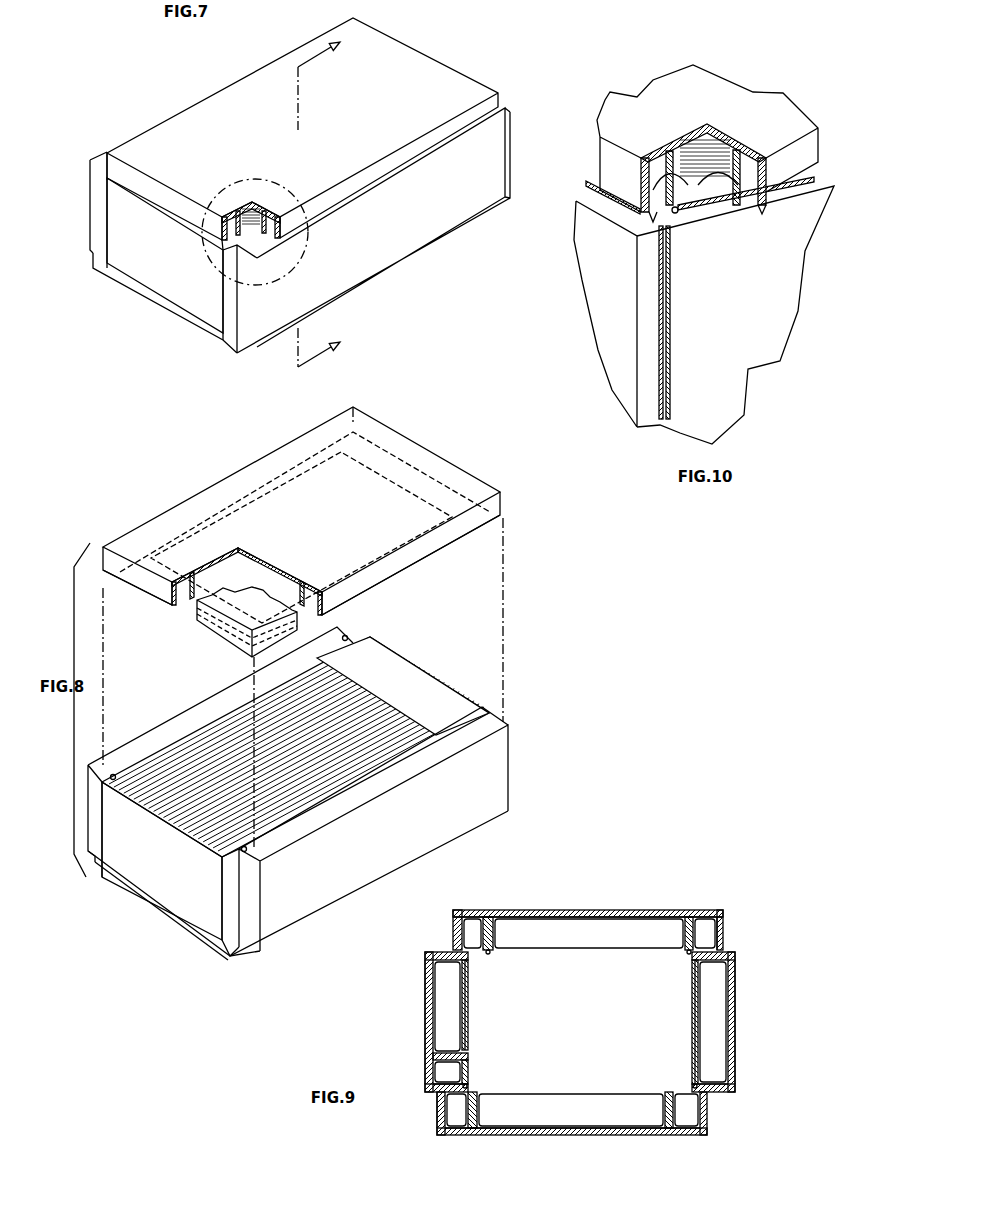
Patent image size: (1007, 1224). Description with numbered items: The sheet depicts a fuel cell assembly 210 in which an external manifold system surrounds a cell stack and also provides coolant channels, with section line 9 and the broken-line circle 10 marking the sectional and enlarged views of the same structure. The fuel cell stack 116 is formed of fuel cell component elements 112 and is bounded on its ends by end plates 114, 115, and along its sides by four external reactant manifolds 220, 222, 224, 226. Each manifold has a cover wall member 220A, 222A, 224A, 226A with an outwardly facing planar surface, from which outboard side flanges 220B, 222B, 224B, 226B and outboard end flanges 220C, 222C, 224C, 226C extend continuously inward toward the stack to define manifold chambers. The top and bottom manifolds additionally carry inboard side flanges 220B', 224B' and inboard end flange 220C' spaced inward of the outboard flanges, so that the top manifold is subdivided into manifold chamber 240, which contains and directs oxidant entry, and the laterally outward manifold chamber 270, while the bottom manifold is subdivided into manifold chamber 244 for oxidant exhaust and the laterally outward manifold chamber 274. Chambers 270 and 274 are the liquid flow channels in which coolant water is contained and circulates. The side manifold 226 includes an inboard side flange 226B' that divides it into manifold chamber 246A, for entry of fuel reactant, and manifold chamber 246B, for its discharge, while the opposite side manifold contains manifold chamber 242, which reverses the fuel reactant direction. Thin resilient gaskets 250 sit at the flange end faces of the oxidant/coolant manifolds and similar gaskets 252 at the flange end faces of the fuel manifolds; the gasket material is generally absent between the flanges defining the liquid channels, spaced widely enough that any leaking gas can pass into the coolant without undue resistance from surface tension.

In FIG. 7, the fuel cell assembly 210 is at (157, 100).
In FIG. 8, the fuel cell assembly 210 is at (555, 580).
In FIG. 9, the fuel cell assembly 210 is at (752, 1017).
In FIG. 7, the reactant manifold 220 is at (413, 75).
In FIG. 10, the reactant manifold 220 is at (717, 95).
In FIG. 8, the reactant manifold 220 is at (413, 453).
In FIG. 9, the reactant manifold 220 is at (640, 908).
In FIG. 9, the cover wall member 220A is at (560, 912).
In FIG. 8, the outboard side flange 220B is at (411, 565).
In FIG. 9, the outboard side flange 220B is at (752, 933).
In FIG. 8, the inboard side flange 220B' is at (280, 581).
In FIG. 9, the inboard side flange 220B' is at (588, 933).
In FIG. 7, the outboard end flange 220C is at (164, 192).
In FIG. 8, the outboard end flange 220C is at (137, 601).
In FIG. 8, the inboard end flange 220C' is at (205, 572).
In FIG. 7, the reactant manifold 222 is at (380, 263).
In FIG. 10, the reactant manifold 222 is at (734, 335).
In FIG. 8, the reactant manifold 222 is at (485, 770).
In FIG. 9, the reactant manifold 222 is at (740, 1055).
In FIG. 9, the cover wall member 222A is at (743, 985).
In FIG. 9, the outboard side flange 222B is at (723, 1100).
In FIG. 8, the outboard end flange 222C is at (247, 952).
In FIG. 7, the reactant manifold 224 is at (215, 347).
In FIG. 8, the reactant manifold 224 is at (184, 928).
In FIG. 9, the reactant manifold 224 is at (610, 1140).
In FIG. 9, the cover wall member 224A is at (543, 1135).
In FIG. 9, the outboard side flange 224B is at (409, 1127).
In FIG. 9, the inboard side flange 224B' is at (570, 1110).
In FIG. 8, the outboard end flange 224C is at (226, 944).
In FIG. 7, the reactant manifold 226 is at (82, 220).
In FIG. 8, the reactant manifold 226 is at (170, 720).
In FIG. 9, the reactant manifold 226 is at (425, 1007).
In FIG. 9, the cover wall member 226A is at (422, 1027).
In FIG. 9, the outboard side flange 226B is at (423, 1105).
In FIG. 9, the inboard side flange 226B' is at (490, 1022).
In FIG. 8, the outboard end flange 226C is at (95, 823).
In FIG. 9, the manifold chamber 240 is at (584, 942).
In FIG. 9, the manifold chamber 242 is at (697, 1022).
In FIG. 9, the manifold chamber 244 is at (559, 1119).
In FIG. 9, the manifold chamber 246A is at (450, 1000).
In FIG. 9, the manifold chamber 246B is at (440, 1072).
In FIG. 10, the gasket 250 is at (648, 160).
In FIG. 9, the gasket 250 is at (687, 947).
In FIG. 10, the gasket 252 is at (659, 250).
In FIG. 9, the gasket 252 is at (465, 968).
In FIG. 9, the manifold chamber 270 is at (466, 920).
In FIG. 9, the manifold chamber 274 is at (462, 1112).
In FIG. 8, the fuel cell component elements 112 is at (485, 711).
In FIG. 7, the end plate 114 is at (157, 273).
In FIG. 10, the end plate 114 is at (616, 335).
In FIG. 8, the end plate 114 is at (160, 884).
In FIG. 8, the end plate 115 is at (415, 671).
In FIG. 8, the fuel cell stack 116 is at (351, 688).
In FIG. 7, the broken line 10 is at (285, 178).
In FIG. 7, the line 9- 9 is at (329, 197).